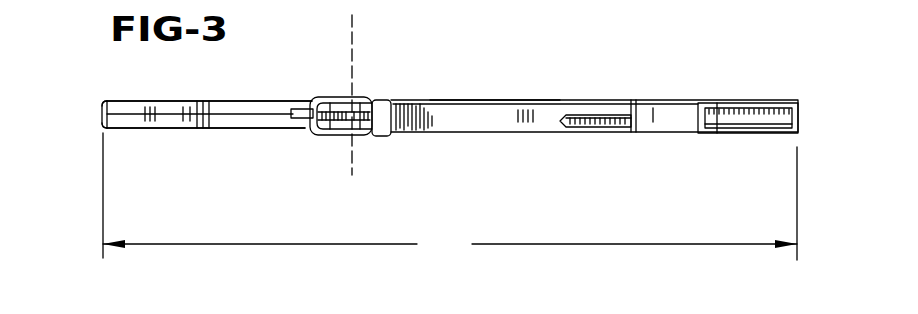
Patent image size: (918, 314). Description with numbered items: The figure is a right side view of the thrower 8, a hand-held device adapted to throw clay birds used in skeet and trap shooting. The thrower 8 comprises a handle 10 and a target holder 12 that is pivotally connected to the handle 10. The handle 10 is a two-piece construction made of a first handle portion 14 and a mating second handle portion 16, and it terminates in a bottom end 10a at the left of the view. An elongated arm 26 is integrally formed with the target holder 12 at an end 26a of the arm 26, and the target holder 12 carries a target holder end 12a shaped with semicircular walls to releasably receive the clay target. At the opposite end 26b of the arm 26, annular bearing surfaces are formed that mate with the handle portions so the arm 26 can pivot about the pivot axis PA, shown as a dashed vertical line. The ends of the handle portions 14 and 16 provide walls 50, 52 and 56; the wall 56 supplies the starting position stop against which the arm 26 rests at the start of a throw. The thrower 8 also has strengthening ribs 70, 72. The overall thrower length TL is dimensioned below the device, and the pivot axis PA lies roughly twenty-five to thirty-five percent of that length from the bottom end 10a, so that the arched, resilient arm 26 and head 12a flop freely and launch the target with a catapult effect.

The thrower 8 is at (259, 90).
The handle 10 is at (99, 134).
The bottom end 10a is at (99, 117).
The target holder 12 is at (576, 90).
The target holder end 12a is at (742, 103).
The first handle portion 14 is at (212, 129).
The second handle portion 16 is at (176, 101).
The elongated arm 26 is at (505, 106).
The end of the arm 26a is at (622, 101).
The end of the elongated arm 26b is at (395, 108).
The wall 50 is at (376, 136).
The wall 52 is at (341, 97).
The wall 56 is at (344, 104).
The strengthening rib 70 is at (597, 127).
The strengthening rib 72 is at (298, 130).
The pivot axis PA is at (355, 48).
The thrower length TL is at (450, 197).